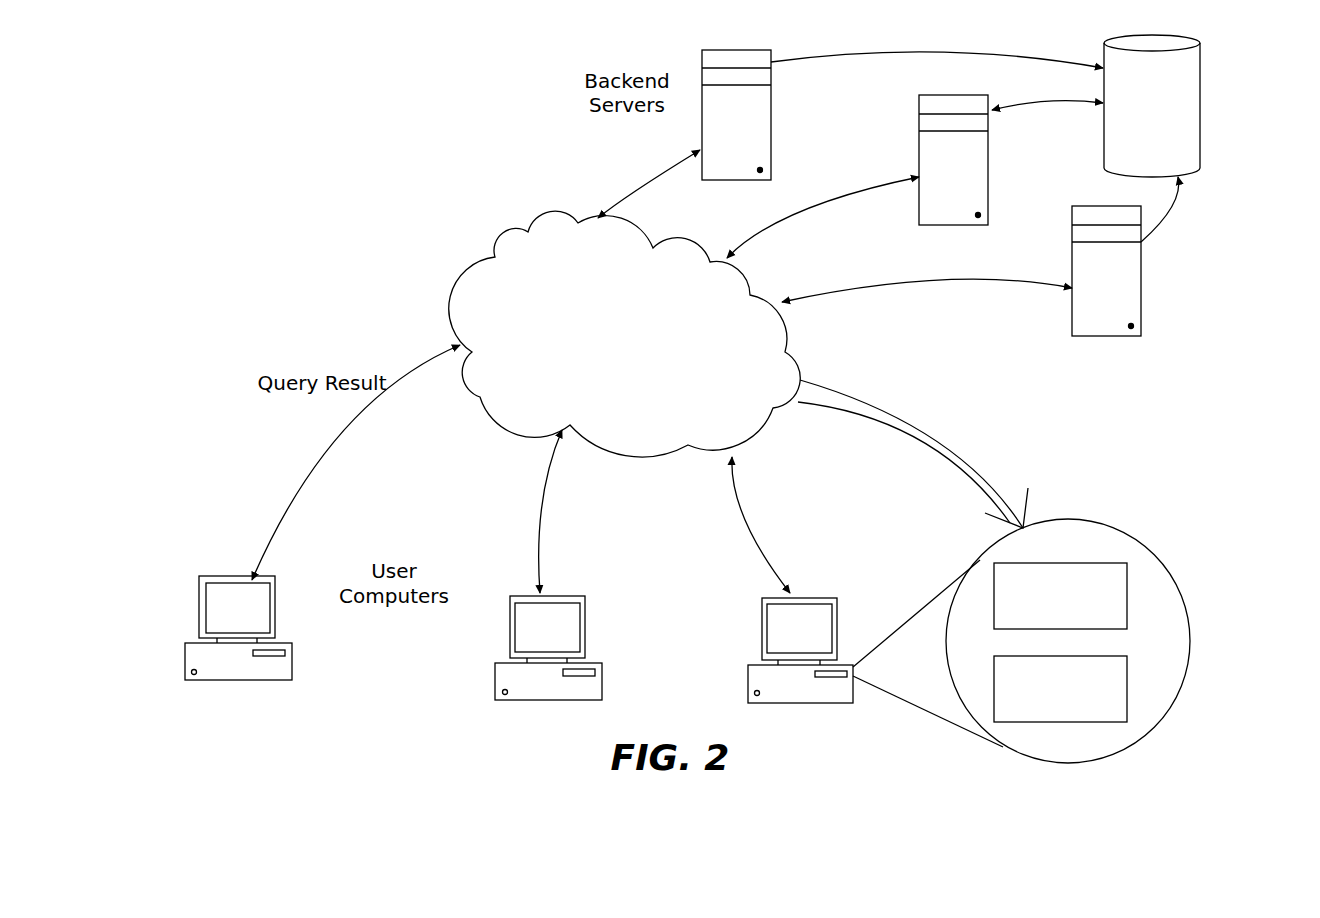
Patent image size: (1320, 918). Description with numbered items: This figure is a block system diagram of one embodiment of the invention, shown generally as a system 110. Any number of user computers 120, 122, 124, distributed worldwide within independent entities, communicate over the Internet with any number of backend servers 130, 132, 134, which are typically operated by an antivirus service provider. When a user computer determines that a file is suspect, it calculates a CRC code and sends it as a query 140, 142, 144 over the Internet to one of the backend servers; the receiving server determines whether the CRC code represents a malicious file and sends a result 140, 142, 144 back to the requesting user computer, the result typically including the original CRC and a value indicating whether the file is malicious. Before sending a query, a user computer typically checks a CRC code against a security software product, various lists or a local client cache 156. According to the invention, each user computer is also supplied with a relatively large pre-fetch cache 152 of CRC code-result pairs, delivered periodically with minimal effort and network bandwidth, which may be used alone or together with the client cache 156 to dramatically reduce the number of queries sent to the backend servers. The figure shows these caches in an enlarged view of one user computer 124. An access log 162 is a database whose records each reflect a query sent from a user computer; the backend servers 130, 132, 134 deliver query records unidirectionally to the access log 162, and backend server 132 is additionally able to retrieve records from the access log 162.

The system 110 is at (397, 193).
The user computer 120 is at (233, 668).
The user computer 122 is at (535, 690).
The user computer 124 is at (768, 692).
The backend server 130 is at (755, 125).
The backend server 132 is at (980, 182).
The backend server 134 is at (1135, 288).
The query and result 140 is at (345, 435).
The query and result 142 is at (542, 505).
The query and result 144 is at (743, 517).
The pre-fetch cache 152 is at (1118, 604).
The client cache 156 is at (1118, 680).
The access log 162 is at (1197, 117).